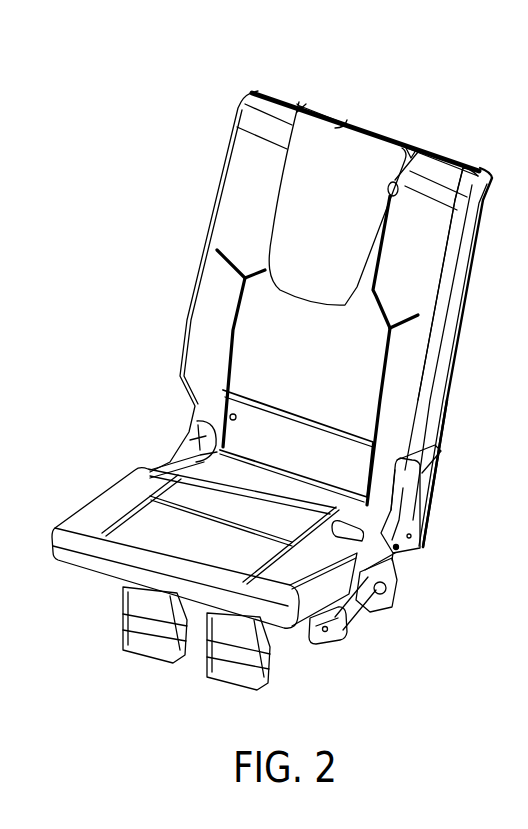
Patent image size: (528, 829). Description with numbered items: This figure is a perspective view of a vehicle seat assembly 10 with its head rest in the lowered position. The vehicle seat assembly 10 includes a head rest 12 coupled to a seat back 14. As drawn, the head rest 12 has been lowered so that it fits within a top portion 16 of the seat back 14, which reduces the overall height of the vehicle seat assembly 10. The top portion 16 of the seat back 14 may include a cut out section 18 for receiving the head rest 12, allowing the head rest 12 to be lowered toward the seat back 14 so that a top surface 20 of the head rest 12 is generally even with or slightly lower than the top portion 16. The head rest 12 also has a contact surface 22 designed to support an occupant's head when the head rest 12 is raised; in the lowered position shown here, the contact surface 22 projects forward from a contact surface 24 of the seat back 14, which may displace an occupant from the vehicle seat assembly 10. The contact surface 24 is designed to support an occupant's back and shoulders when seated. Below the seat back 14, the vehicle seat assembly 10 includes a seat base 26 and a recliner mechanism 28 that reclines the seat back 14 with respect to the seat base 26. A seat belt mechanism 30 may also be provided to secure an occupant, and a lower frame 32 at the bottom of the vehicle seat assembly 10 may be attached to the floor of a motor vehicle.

The vehicle seat assembly 10 is at (238, 92).
The head rest 12 is at (270, 178).
The seat back 14 is at (458, 415).
The top portion 16 is at (403, 136).
The cut out section 18 is at (299, 106).
The top surface 20 is at (337, 131).
The contact surface 22 is at (276, 224).
The contact surface 24 is at (447, 235).
The seat base 26 is at (127, 538).
The recliner mechanism 28 is at (397, 514).
The seat belt mechanism 30 is at (383, 593).
The lower frame 32 is at (316, 640).